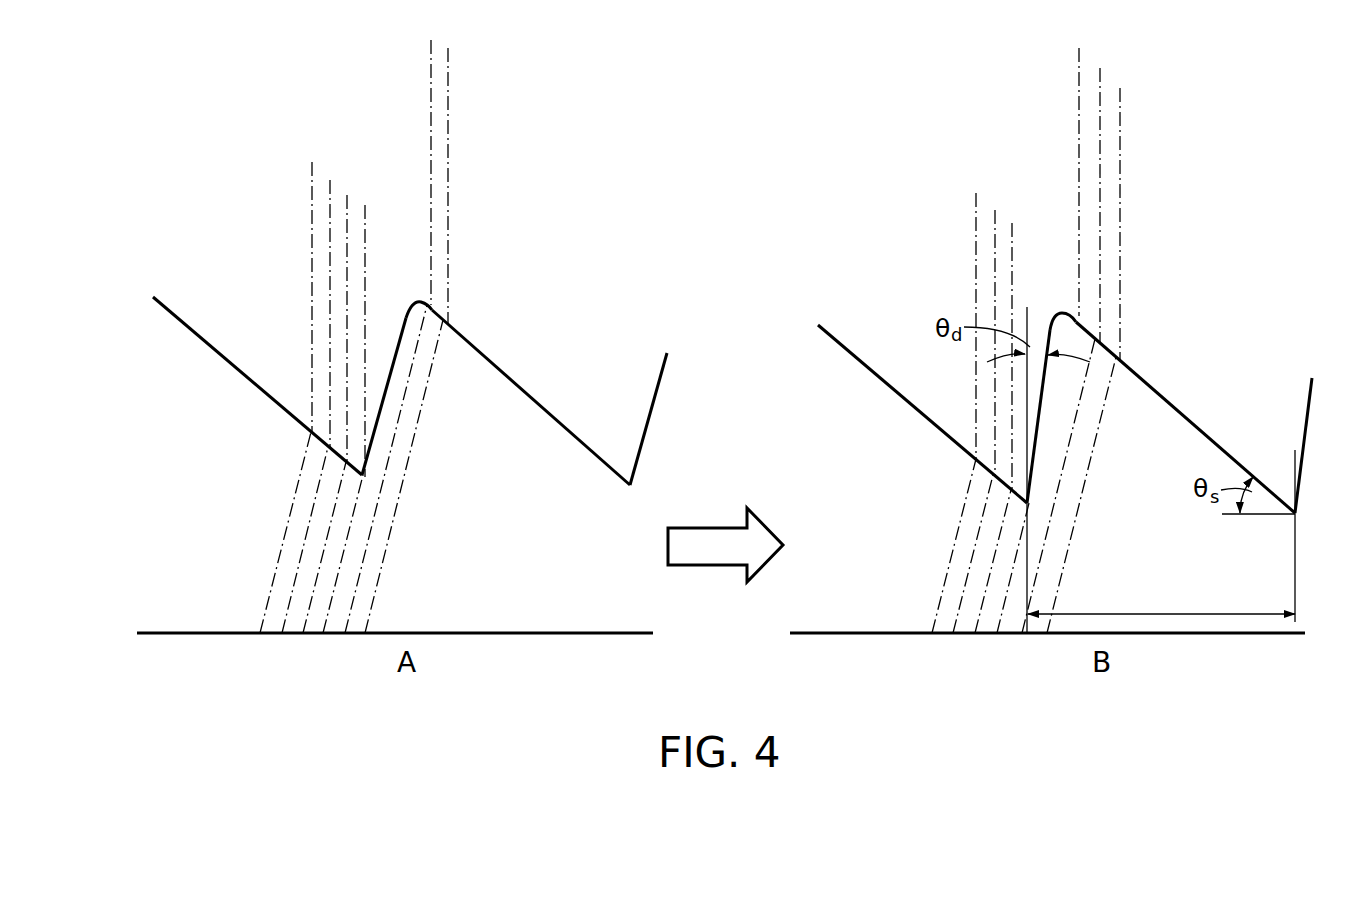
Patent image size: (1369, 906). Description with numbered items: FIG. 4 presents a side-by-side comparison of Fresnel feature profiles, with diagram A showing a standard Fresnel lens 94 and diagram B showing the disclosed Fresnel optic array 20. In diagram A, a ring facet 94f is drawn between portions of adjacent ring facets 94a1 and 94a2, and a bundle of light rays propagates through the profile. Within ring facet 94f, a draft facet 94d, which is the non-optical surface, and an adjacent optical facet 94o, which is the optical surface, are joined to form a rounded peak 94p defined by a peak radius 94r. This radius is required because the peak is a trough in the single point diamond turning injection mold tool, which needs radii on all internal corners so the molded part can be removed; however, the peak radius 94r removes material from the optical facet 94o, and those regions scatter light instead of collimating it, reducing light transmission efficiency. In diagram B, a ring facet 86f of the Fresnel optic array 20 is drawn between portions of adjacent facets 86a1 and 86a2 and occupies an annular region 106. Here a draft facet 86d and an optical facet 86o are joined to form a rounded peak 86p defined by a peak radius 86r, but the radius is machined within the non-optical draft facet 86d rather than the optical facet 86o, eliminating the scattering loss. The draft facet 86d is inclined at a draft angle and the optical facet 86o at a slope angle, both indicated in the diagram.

The standard Fresnel lens 94 is at (496, 289).
The adjacent ring facet 94a1 is at (203, 337).
The adjacent ring facet 94a2 is at (651, 384).
The rounded peak 94p is at (425, 302).
The ring facet 94f is at (433, 291).
The peak radius 94r is at (420, 310).
The draft facet 94d is at (380, 418).
The optical facet 94o is at (560, 422).
The Fresnel optic array 20 is at (922, 389).
The adjacent facet 86a1 is at (853, 349).
The adjacent facet 86a2 is at (1303, 419).
The rounded peak 86p is at (1058, 314).
The ring facet 86f is at (1076, 304).
The peak radius 86r is at (1062, 322).
The draft facet 86d is at (1038, 420).
The optical facet 86o is at (1200, 430).
The annular region 106 is at (1173, 614).